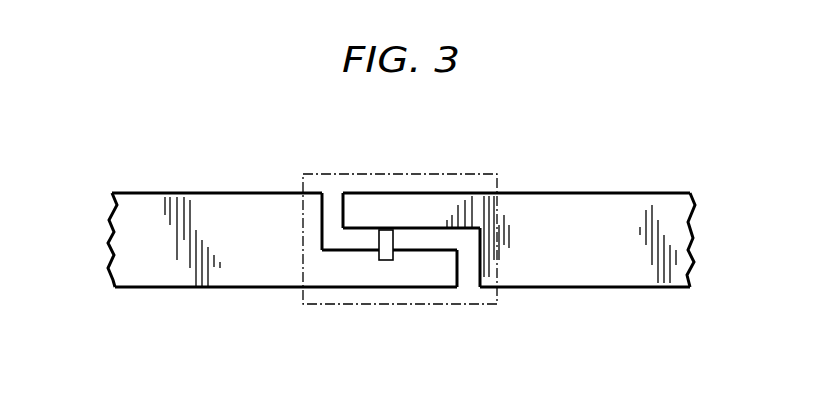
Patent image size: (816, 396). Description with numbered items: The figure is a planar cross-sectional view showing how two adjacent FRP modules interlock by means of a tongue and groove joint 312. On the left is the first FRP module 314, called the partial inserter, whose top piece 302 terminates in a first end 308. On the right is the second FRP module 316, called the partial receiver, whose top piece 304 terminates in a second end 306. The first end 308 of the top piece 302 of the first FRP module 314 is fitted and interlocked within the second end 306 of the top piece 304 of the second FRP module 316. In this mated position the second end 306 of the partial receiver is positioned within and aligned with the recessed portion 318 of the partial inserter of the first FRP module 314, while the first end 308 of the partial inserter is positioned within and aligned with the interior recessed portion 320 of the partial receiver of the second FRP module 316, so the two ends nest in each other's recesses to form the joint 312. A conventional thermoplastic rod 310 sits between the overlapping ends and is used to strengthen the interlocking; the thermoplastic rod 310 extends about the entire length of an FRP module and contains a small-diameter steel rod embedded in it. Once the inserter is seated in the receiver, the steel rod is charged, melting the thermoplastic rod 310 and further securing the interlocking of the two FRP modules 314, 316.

The top piece of first FRP module 302 is at (203, 208).
The top piece of second FRP module 304 is at (563, 203).
The second end of top piece of second FRP module 306 is at (358, 214).
The first end of top piece of first FRP module 308 is at (426, 278).
The thermoplastic rod 310 is at (388, 256).
The tongue and groove joint 312 is at (484, 305).
The first FRP module 314 is at (152, 193).
The second FRP module 316 is at (658, 190).
The recessed portion of partial inserter 318 is at (332, 240).
The interior recessed portion of partial receiver 320 is at (469, 248).